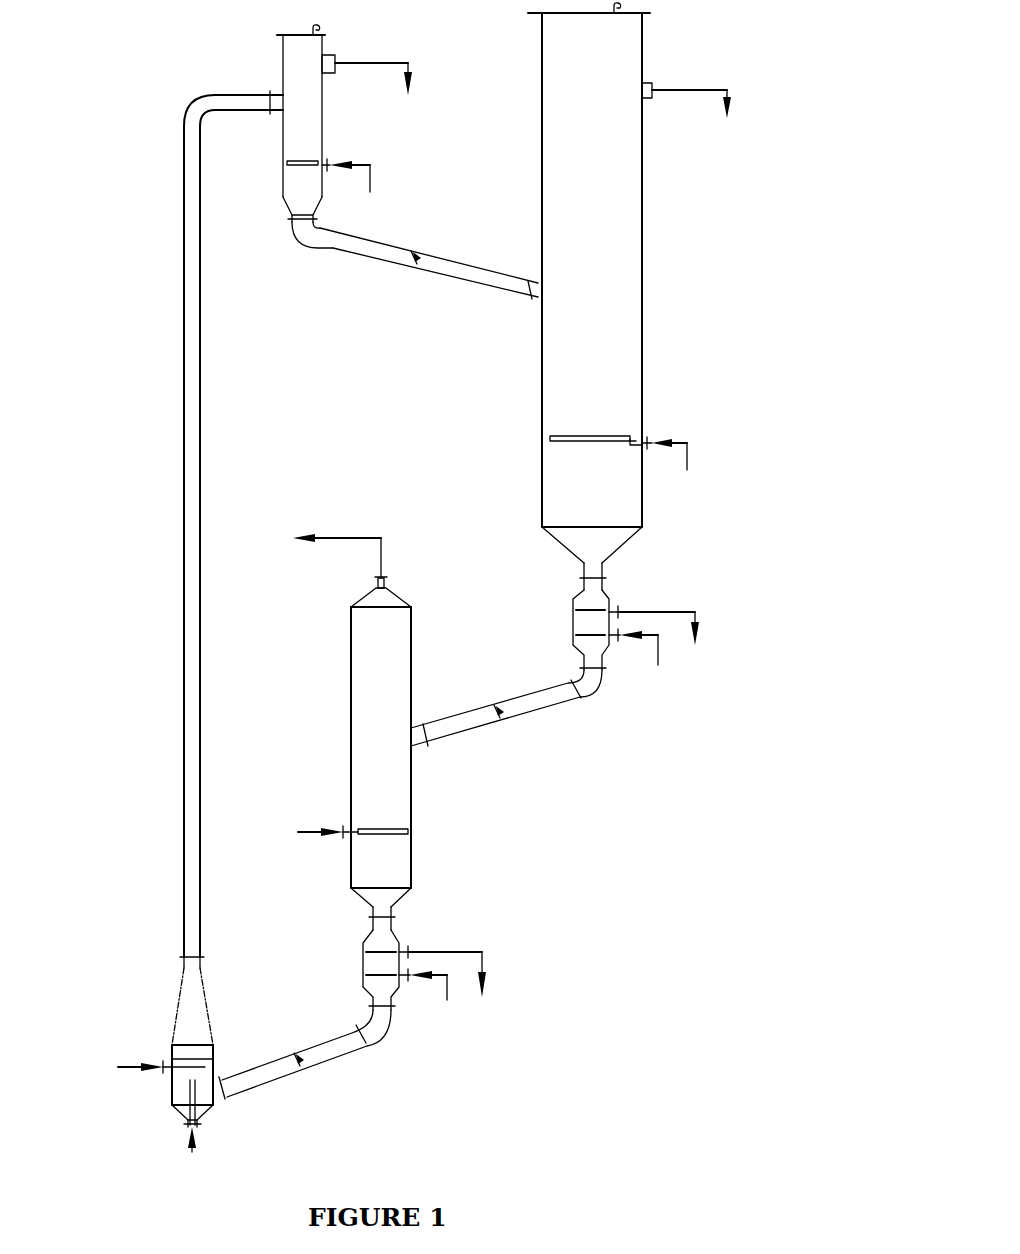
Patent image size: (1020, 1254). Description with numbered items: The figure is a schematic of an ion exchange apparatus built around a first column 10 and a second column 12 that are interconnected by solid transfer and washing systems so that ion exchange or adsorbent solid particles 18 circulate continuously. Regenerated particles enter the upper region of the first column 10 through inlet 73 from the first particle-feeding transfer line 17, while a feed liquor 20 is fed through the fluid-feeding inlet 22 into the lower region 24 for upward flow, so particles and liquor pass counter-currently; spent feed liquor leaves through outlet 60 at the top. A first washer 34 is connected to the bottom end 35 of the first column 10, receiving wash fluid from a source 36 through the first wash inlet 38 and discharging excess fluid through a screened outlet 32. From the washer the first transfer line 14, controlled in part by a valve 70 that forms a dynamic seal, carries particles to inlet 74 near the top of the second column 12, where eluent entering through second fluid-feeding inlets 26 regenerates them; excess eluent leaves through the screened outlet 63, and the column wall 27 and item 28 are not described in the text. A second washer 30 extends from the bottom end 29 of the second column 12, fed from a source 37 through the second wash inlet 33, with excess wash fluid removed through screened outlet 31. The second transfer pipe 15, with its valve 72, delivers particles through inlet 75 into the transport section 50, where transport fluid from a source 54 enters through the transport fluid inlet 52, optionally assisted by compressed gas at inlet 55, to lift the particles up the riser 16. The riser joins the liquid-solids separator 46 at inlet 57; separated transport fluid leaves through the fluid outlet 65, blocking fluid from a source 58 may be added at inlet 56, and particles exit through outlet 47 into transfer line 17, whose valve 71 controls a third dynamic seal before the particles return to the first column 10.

The first column 10 is at (643, 170).
The second column 12 is at (350, 656).
The first transfer line 14 is at (560, 704).
The second transfer pipe 15 is at (360, 1045).
The riser 16 is at (178, 415).
The first particle-feeding transfer line 17 is at (440, 282).
The solid particles 18 is at (590, 342).
The feed liquor 20 is at (681, 453).
The fluid-feeding inlet 22 is at (565, 436).
The lower region 24 is at (643, 408).
The second fluid-feeding inlet 26 is at (400, 830).
The vessel wall 27 is at (350, 706).
The feed inlet 28 is at (313, 833).
The bottom end 29 is at (418, 898).
The second washer 30 is at (361, 955).
The screened outlet 31 is at (457, 971).
The screened outlet 32 is at (669, 625).
The second wash inlet 33 is at (361, 976).
The first washer 34 is at (575, 615).
The bottom end 35 is at (620, 548).
The source 36 is at (641, 661).
The source 37 is at (431, 1001).
The first wash inlet 38 is at (575, 638).
The liquid-solids separator 46 is at (283, 57).
The outlet 47 is at (322, 206).
The transport section 50 is at (215, 1052).
The transport fluid inlet 52 is at (183, 1092).
The source 54 is at (204, 1152).
The inlet 55 is at (147, 1067).
The inlet 56 is at (320, 161).
The inlet 57 is at (278, 86).
The source 58 is at (364, 176).
The outlet 60 is at (702, 100).
The screened outlet 63 is at (337, 545).
The fluid outlet 65 is at (382, 75).
The valve 70 is at (505, 718).
The valve 71 is at (420, 258).
The valve 72 is at (300, 1070).
The inlet 73 is at (538, 280).
The inlet 74 is at (425, 735).
The inlet 75 is at (220, 1098).